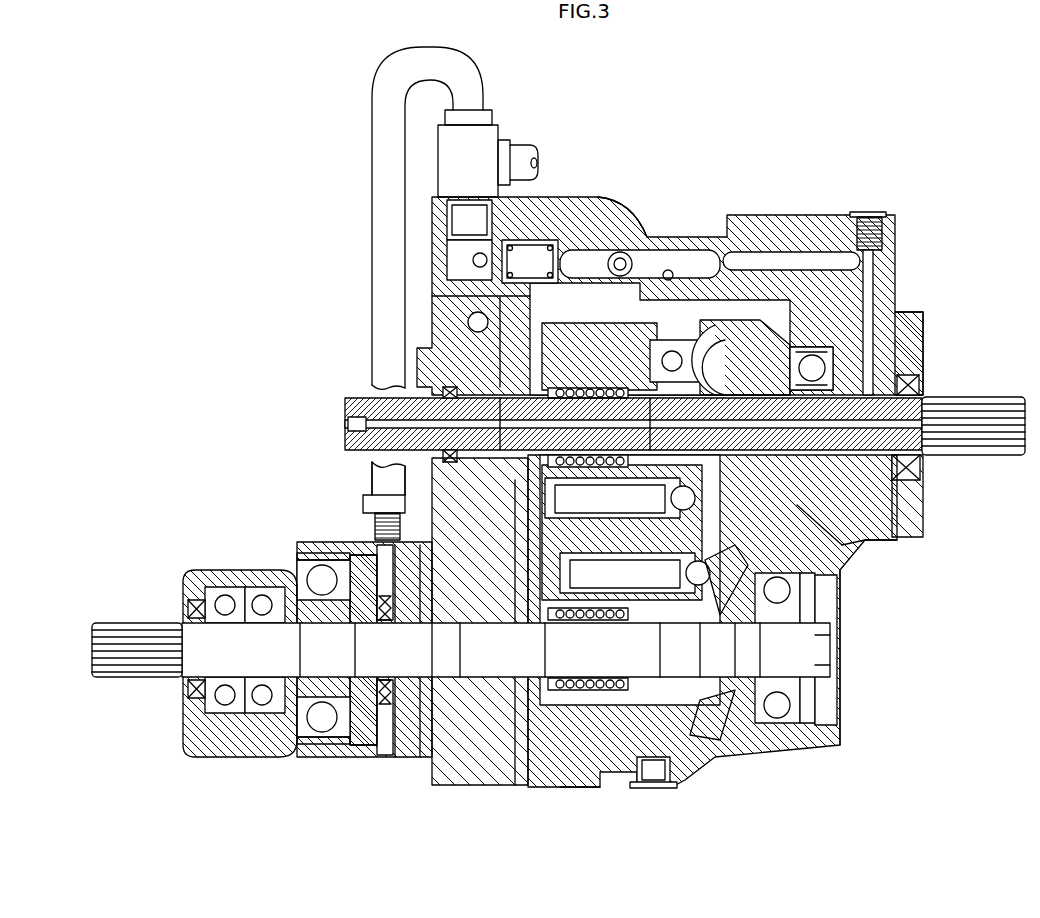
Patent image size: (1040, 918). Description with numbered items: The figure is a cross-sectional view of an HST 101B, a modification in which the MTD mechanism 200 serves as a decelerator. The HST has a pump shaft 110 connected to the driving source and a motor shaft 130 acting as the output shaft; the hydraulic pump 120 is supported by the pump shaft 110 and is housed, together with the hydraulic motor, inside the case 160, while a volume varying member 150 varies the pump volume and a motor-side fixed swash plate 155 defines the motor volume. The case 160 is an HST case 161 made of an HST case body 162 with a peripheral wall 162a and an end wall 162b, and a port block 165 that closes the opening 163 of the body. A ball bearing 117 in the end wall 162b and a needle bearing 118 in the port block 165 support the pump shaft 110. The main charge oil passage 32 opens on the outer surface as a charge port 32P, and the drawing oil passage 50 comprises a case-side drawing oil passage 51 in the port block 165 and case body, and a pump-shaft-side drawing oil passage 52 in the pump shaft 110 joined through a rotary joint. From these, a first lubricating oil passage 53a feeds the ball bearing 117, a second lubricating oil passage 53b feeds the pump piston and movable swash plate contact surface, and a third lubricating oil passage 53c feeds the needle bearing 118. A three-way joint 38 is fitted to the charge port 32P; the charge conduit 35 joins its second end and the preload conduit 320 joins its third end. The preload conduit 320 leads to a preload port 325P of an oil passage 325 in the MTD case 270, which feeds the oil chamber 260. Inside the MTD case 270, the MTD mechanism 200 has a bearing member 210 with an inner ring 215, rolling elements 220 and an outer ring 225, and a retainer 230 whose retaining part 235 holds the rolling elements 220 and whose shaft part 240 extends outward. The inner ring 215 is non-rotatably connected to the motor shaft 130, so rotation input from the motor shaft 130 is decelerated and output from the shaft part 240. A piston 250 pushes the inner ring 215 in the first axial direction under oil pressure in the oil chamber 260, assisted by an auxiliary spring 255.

The preload conduit 320 is at (385, 143).
The three-way joint 38 is at (487, 135).
The charge port 32P is at (482, 226).
The charge conduit 35 is at (525, 155).
The case 160 is at (713, 160).
The HST 101B is at (823, 110).
The main charge oil passage 32 is at (460, 248).
The hydraulic pump 120 is at (590, 300).
The opening 163 is at (490, 300).
The needle bearing 118 is at (465, 345).
The peripheral wall 162a is at (612, 212).
The drawing oil passage 50 is at (662, 247).
The case-side drawing oil passage 51 is at (800, 266).
The end wall 162b is at (898, 292).
The volume varying member 150 is at (718, 350).
The first lubricating oil passage 53a is at (838, 362).
The second lubricating oil passage 53b is at (905, 374).
The third lubricating oil passage 53c is at (356, 426).
The pump shaft 110 is at (968, 447).
The HST case 161 is at (600, 832).
The port block 165 is at (522, 792).
The HST case body 162 is at (596, 792).
The motor-side fixed swash plate 155 is at (695, 757).
The ball bearing 117 is at (855, 532).
The pump-shaft-side drawing oil passage 52 is at (870, 500).
The motor shaft 130 is at (486, 720).
The oil passage 325 is at (375, 520).
The preload port 325P is at (378, 482).
The inner ring 215 is at (326, 600).
The oil chamber 260 is at (390, 746).
The piston 250 is at (362, 755).
The auxiliary spring 255 is at (415, 748).
The outer ring 225 is at (318, 566).
The rolling elements 220 is at (320, 584).
The bearing member 210 is at (208, 508).
The MTD mechanism 200 is at (316, 542).
The MTD case 270 is at (186, 724).
The shaft part 240 is at (220, 655).
The retaining part 235 is at (276, 730).
The retainer 230 is at (290, 792).